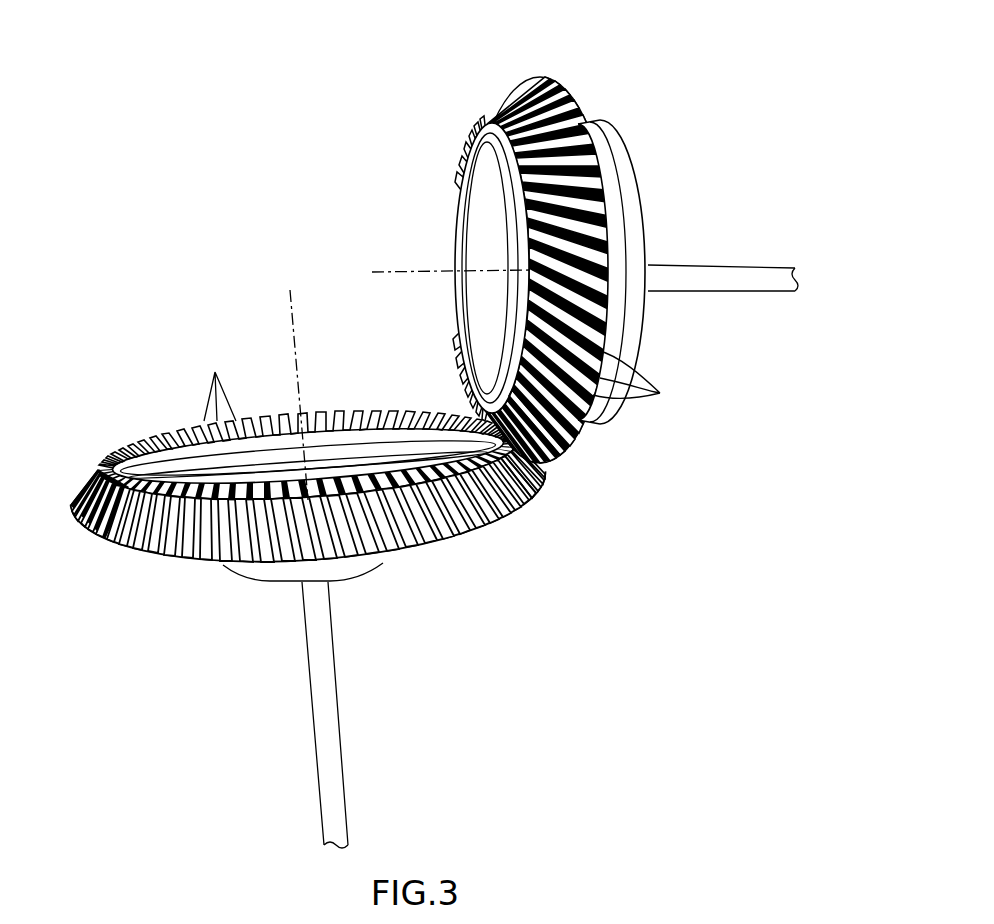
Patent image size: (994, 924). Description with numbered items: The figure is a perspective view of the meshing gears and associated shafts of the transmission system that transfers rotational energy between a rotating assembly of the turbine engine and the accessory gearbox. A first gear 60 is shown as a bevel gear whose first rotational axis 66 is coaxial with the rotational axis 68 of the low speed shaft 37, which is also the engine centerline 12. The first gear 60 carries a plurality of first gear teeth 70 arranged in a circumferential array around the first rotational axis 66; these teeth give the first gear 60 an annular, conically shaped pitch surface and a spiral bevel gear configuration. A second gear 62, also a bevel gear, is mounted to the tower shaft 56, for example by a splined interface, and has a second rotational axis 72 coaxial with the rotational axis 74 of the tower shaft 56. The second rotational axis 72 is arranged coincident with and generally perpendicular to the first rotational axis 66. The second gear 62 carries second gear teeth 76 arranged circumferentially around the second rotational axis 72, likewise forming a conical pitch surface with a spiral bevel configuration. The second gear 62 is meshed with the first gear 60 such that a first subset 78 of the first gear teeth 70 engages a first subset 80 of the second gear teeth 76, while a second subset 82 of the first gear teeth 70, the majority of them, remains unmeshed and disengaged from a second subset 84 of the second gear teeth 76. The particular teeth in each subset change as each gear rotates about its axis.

The centerline 12 is at (443, 238).
The low speed shaft 37 is at (726, 264).
The tower shaft 56 is at (338, 702).
The first gear 60 is at (549, 241).
The second gear 62 is at (173, 568).
The first rotational axis 66 is at (443, 238).
The rotational axis of the low speed shaft 68 is at (410, 270).
The first gear teeth 70 is at (660, 393).
The second rotational axis 72 is at (334, 395).
The rotational axis of the tower shaft 74 is at (296, 337).
The second gear teeth 76 is at (218, 386).
The first subset of the first gear teeth 78 is at (562, 477).
The first subset of the second gear teeth 80 is at (546, 493).
The second subset of the first gear teeth 82 is at (509, 83).
The second subset of the second gear teeth 84 is at (166, 414).